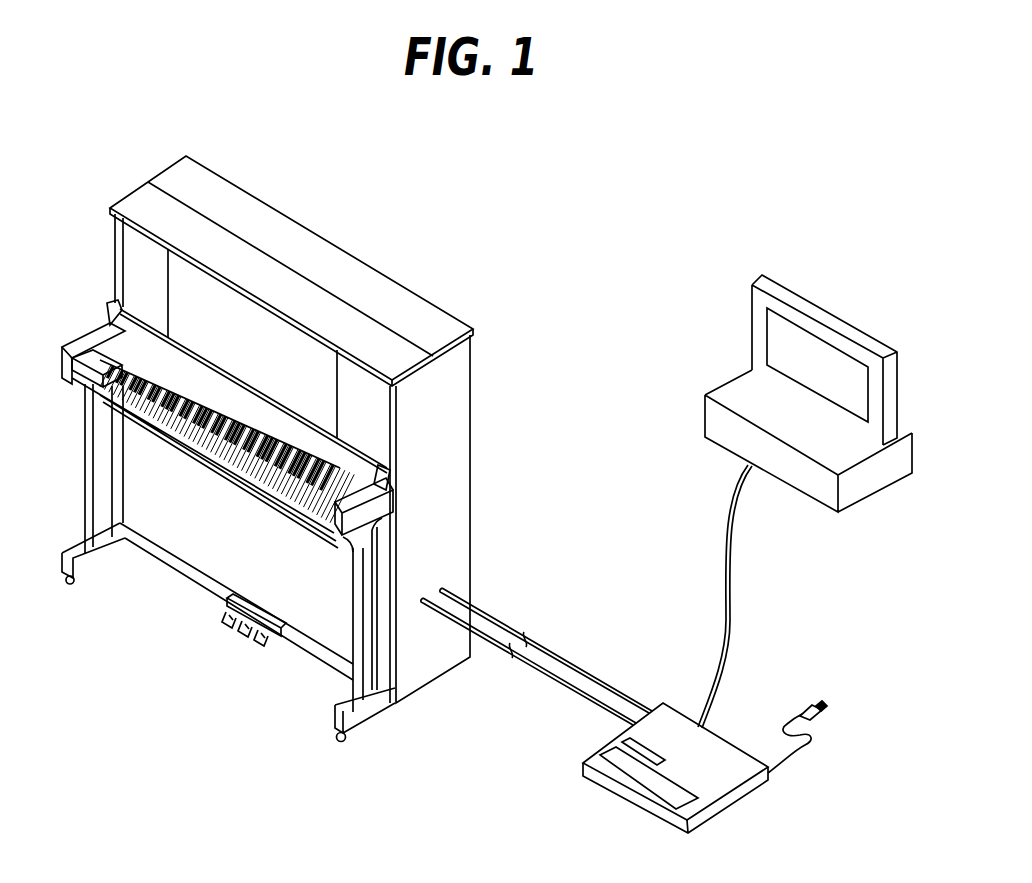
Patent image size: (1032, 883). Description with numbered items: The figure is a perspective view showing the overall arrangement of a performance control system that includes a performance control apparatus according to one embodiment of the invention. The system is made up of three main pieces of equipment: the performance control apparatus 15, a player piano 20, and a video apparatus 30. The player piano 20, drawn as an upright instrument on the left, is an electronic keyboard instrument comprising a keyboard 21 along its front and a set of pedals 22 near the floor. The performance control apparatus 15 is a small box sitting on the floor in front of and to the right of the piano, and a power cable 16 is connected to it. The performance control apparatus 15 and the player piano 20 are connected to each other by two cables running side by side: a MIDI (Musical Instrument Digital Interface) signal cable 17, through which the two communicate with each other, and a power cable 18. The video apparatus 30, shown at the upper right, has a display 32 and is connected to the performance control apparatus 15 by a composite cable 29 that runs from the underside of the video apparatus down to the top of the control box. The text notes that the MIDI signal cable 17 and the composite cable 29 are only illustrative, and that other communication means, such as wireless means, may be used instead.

The performance control apparatus 15 is at (735, 795).
The power cable 16 is at (832, 745).
The MIDI signal cable 17 is at (573, 662).
The power cable 18 is at (548, 677).
The player piano 20 is at (450, 428).
The keyboard 21 is at (107, 357).
The pedals 22 is at (248, 646).
The composite cable 29 is at (727, 589).
The video apparatus 30 is at (792, 381).
The display 32 is at (820, 355).